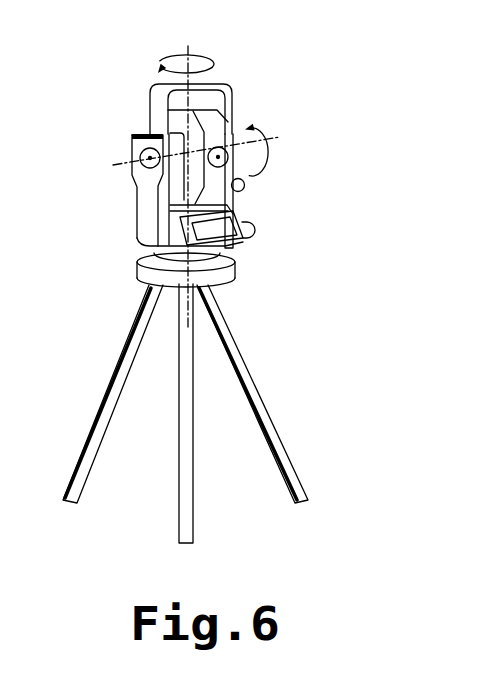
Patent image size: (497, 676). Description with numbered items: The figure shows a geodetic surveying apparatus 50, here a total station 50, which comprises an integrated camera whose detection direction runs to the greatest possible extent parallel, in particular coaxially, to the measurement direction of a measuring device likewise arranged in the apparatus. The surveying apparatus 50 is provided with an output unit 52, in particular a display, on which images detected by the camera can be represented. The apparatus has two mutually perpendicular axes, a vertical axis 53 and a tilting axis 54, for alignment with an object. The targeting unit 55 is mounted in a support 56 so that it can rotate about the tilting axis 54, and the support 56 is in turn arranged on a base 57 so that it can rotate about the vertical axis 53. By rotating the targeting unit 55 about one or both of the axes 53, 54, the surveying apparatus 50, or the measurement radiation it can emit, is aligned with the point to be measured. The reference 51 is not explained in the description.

The geodetic surveying apparatus 50 is at (251, 49).
The right standard / support 51 is at (234, 162).
The output unit 52 is at (215, 228).
The vertical axis 53 is at (186, 44).
The tilting axis 54 is at (126, 165).
The targeting unit 55 is at (217, 127).
The support 56 is at (145, 199).
The base 57 is at (137, 273).